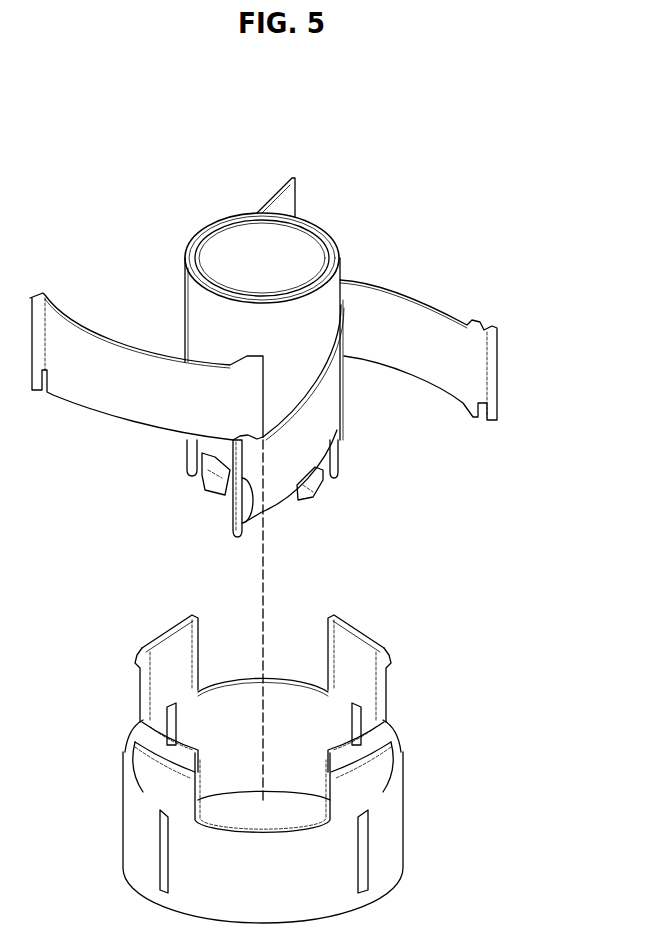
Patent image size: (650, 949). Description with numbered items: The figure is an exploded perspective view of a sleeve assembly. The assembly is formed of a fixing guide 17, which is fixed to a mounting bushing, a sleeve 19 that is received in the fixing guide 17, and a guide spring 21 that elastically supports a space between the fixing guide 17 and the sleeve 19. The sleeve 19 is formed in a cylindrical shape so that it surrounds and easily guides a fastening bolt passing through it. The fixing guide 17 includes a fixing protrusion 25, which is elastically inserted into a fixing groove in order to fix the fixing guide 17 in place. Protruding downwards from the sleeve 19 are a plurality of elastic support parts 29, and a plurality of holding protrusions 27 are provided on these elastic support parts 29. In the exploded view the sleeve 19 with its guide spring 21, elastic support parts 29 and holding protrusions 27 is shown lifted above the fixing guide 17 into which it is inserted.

The fixing guide 17 is at (392, 828).
The sleeve 19 is at (327, 232).
The guide spring 21 is at (105, 345).
The fixing protrusion 25 is at (388, 740).
The holding protrusion 27 is at (240, 523).
The elastic support part 29 is at (205, 478).